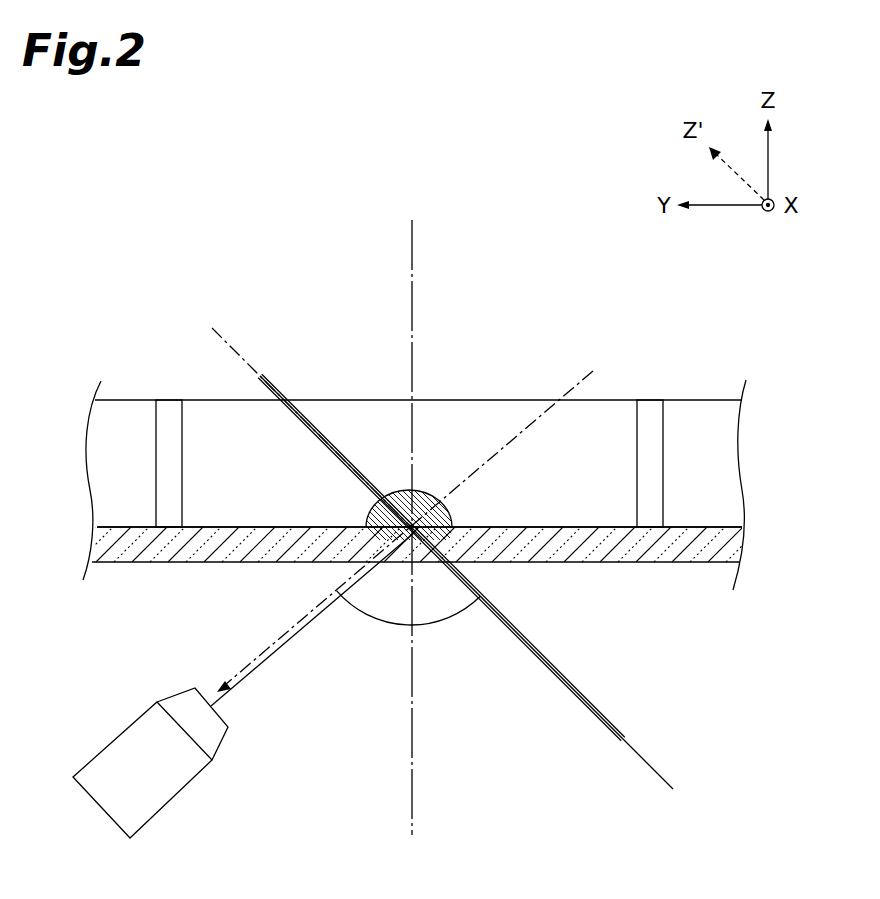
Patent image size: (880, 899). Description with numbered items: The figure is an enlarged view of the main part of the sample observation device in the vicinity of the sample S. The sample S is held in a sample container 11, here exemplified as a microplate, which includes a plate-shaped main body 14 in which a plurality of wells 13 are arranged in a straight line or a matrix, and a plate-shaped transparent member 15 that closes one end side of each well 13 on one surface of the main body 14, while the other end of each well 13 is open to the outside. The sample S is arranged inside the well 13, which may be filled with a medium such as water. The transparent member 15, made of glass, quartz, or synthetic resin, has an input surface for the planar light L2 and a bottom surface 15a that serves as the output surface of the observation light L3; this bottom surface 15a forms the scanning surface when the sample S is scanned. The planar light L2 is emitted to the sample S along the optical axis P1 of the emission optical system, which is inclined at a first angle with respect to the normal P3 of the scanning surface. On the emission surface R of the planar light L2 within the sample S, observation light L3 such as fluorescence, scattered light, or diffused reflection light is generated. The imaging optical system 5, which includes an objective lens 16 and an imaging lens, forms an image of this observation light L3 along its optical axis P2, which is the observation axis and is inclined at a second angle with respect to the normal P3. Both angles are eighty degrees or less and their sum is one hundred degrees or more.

The sample container 11 is at (108, 338).
The well 13 is at (224, 424).
The main body 14 is at (720, 387).
The transparent member 15 is at (625, 563).
The bottom surface 15a is at (197, 563).
The objective lens 16 is at (122, 733).
The imaging optical system 5 is at (143, 745).
The optical axis of the emission optical system P1 is at (235, 353).
The optical axis of the imaging optical system P2 is at (260, 668).
The normal of the scanning surface P3 is at (413, 248).
The planar light L2 is at (615, 717).
The observation light L3 is at (283, 632).
The emission surface R is at (403, 492).
The sample S is at (372, 508).